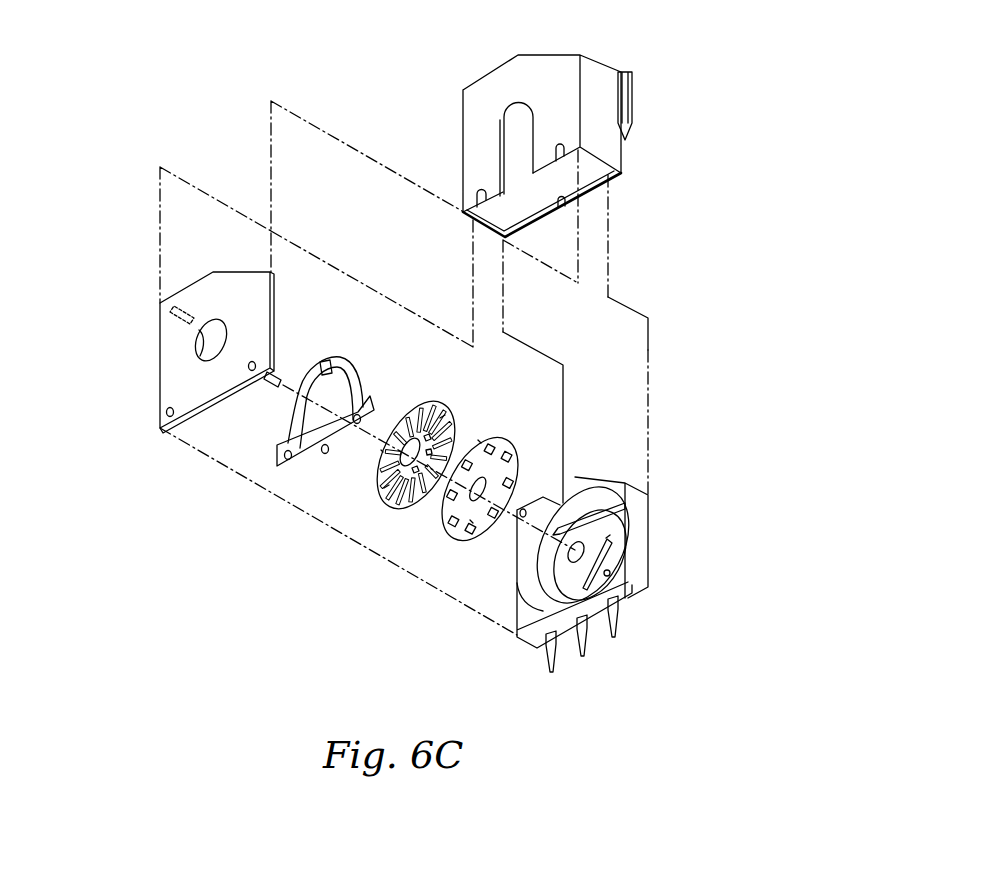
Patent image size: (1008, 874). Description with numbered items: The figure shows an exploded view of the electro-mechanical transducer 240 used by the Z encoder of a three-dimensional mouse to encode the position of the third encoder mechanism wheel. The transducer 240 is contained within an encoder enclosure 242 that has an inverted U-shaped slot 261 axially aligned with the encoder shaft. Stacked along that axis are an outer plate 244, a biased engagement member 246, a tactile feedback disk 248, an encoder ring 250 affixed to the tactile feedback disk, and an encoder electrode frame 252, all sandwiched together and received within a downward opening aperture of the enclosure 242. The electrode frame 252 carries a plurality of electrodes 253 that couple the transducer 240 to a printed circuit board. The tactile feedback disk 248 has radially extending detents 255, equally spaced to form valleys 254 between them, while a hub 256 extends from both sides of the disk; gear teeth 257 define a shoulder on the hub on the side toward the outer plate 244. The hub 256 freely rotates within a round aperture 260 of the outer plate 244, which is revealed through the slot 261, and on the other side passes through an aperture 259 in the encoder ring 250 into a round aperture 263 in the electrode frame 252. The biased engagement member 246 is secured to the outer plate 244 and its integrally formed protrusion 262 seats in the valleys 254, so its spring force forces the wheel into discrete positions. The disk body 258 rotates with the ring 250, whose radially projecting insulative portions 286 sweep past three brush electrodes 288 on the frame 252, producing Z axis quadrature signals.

The electro-mechanical transducer 240 is at (249, 656).
The encoder enclosure 242 is at (632, 108).
The outer plate 244 is at (163, 380).
The biased engagement member 246 is at (264, 466).
The tactile feedback disk 248 is at (395, 505).
The encoder ring 250 is at (520, 463).
The encoder electrode frame 252 is at (648, 563).
The electrodes 253 is at (643, 618).
The valleys 254 is at (427, 408).
The detents 255 is at (455, 420).
The hub 256 is at (406, 438).
The gear teeth 257 is at (478, 440).
The disk body 258 is at (383, 452).
The aperture 259 is at (472, 520).
The round aperture 260 is at (208, 346).
The inverted U-shaped slot 261 is at (520, 128).
The protrusion 262 is at (328, 362).
The round aperture 263 is at (606, 538).
The insulative portions 286 is at (463, 548).
The brush electrodes 288 is at (572, 503).